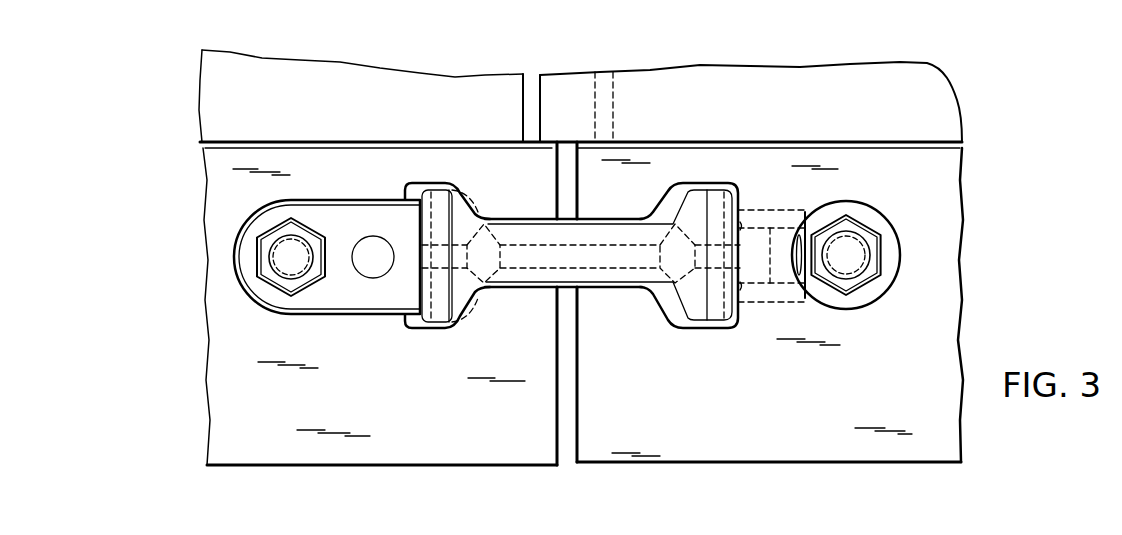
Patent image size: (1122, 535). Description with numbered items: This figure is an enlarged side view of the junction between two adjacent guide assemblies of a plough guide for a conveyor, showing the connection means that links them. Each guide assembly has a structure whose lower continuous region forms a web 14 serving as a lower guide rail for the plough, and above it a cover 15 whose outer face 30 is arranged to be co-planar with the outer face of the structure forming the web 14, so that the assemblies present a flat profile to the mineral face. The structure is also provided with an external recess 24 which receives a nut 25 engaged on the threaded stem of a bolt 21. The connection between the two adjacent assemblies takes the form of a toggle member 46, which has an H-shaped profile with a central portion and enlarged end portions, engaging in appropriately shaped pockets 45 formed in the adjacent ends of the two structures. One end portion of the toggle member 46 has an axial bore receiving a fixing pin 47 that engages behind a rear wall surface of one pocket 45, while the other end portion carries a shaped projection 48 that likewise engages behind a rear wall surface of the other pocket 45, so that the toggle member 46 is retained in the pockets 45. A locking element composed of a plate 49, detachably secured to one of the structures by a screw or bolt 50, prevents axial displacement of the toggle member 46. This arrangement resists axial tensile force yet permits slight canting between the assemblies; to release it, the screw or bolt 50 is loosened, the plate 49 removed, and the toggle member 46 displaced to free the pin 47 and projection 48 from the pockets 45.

The web 14 is at (460, 411).
The cover 15 is at (337, 78).
The bolt 21 is at (856, 262).
The external recess 24 is at (870, 215).
The nut 25 is at (882, 238).
The outer face 30 is at (290, 108).
The pocket 45 is at (408, 190).
The toggle member 46 is at (625, 282).
The fixing pin 47 is at (762, 235).
The shaped projection 48 is at (472, 203).
The plate 49 is at (369, 297).
The screw or bolt 50 is at (300, 267).